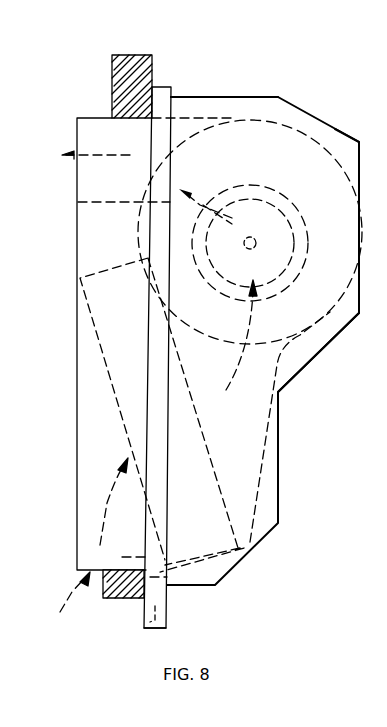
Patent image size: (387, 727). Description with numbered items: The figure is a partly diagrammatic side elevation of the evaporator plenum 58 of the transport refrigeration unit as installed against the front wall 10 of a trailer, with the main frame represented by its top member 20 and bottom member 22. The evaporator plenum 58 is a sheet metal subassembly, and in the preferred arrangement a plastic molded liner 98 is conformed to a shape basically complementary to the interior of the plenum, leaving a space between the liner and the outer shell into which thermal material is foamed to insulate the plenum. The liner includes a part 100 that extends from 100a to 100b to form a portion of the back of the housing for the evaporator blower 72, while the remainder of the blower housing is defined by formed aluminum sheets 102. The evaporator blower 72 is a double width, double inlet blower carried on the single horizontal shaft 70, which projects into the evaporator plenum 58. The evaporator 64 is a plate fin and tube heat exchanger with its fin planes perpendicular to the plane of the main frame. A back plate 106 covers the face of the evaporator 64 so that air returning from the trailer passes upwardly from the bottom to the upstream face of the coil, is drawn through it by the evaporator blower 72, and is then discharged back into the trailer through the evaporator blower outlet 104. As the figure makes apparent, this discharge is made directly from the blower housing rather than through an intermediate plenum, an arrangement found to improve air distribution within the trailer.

The front wall 10 is at (152, 68).
The top member 20 is at (165, 88).
The bottom member 22 is at (145, 628).
The evaporator plenum 58 is at (362, 156).
The evaporator 64 is at (208, 446).
The shaft 70 is at (256, 248).
The evaporator blower 72 is at (270, 192).
The plastic molded liner 98 is at (263, 456).
The liner part 100 is at (350, 198).
The first end of liner part 100a is at (336, 340).
The second end of liner part 100b is at (195, 116).
The formed aluminum sheets 102 is at (224, 336).
The evaporator blower outlet 104 is at (78, 130).
The back plate 106 is at (77, 490).